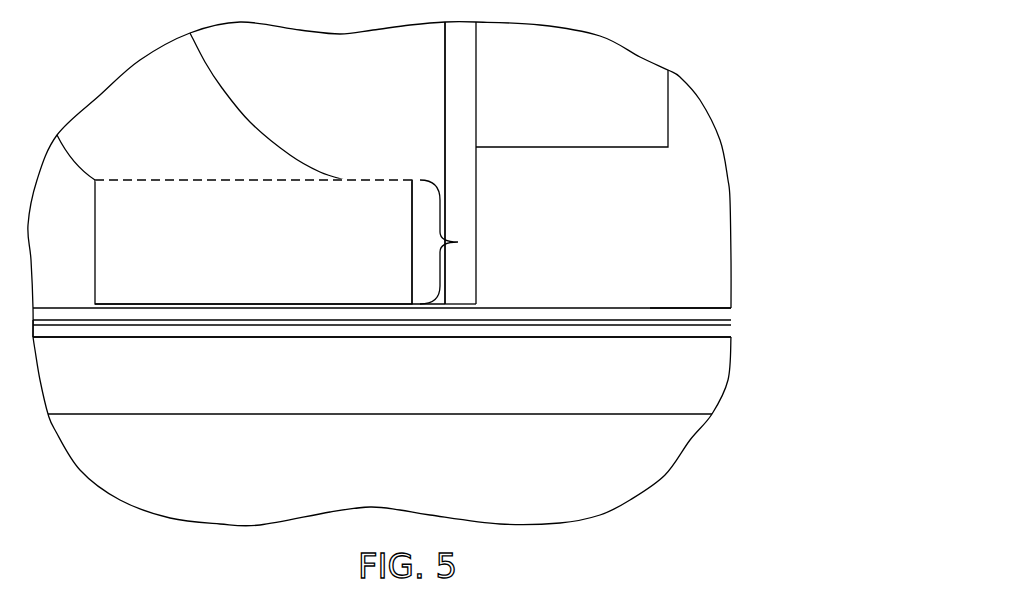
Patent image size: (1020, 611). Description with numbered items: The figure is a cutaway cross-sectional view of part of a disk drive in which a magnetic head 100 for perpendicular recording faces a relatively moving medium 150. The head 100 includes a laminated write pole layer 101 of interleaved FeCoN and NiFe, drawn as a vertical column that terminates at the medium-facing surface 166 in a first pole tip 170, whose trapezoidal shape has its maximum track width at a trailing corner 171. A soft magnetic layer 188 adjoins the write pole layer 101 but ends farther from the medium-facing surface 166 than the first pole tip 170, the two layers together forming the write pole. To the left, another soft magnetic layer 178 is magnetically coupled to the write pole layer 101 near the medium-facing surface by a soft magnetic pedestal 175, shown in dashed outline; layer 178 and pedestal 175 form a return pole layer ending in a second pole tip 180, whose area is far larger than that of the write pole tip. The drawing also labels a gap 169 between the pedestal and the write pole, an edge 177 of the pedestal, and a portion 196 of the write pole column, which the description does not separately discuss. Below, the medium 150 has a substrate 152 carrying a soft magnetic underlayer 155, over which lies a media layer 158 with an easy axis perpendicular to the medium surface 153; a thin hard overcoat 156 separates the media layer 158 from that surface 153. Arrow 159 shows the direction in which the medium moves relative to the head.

The magnetic head 100 is at (697, 58).
The write pole layer 101 is at (445, 127).
The medium 150 is at (700, 492).
The substrate 152 is at (380, 444).
The major surface of the medium 153 is at (668, 318).
The soft magnetic underlayer 155 is at (382, 357).
The overcoat 156 is at (590, 326).
The media layer 158 is at (652, 338).
The arrow 159 is at (270, 485).
The medium-facing surface 166 is at (699, 310).
The gap 169 is at (460, 242).
The first pole tip 170 is at (460, 306).
The trailing corner 171 is at (440, 310).
The soft magnetic pedestal 175 is at (188, 178).
The sidewall of region 177 is at (412, 247).
The soft magnetic layer 178 is at (224, 88).
The second pole tip 180 is at (255, 310).
The soft magnetic layer 188 is at (668, 115).
The vertical member 196 is at (443, 70).